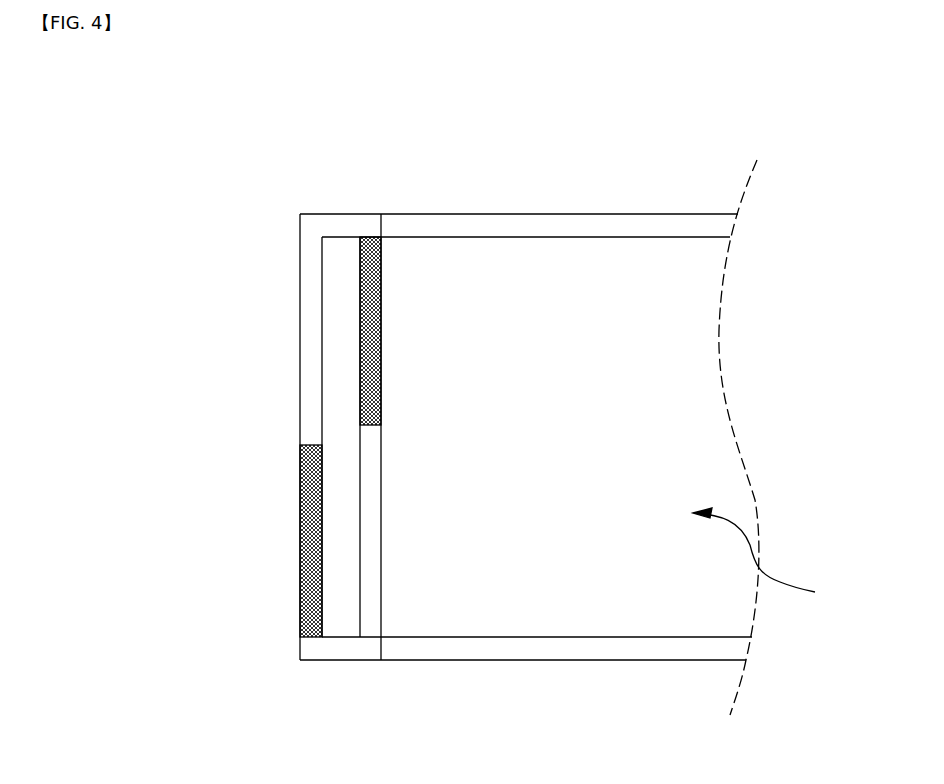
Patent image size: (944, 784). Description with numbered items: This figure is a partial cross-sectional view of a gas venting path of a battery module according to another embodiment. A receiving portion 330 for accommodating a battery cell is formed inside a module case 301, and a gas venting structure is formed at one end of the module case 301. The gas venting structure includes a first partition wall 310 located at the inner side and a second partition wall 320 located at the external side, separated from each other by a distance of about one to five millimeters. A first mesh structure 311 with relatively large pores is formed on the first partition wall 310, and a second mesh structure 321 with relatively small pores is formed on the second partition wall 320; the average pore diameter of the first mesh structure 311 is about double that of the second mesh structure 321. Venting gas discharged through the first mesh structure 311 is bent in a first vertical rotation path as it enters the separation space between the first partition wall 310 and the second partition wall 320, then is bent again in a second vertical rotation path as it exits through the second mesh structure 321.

The module case 301 is at (638, 214).
The first partition wall 310 is at (382, 583).
The first mesh structure 311 is at (380, 335).
The second partition wall 320 is at (300, 293).
The second mesh structure 321 is at (300, 531).
The receiving portion 330 is at (776, 556).